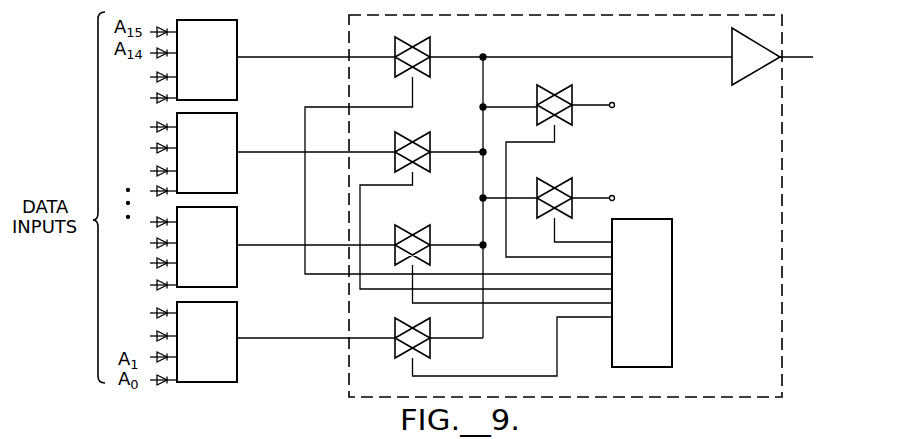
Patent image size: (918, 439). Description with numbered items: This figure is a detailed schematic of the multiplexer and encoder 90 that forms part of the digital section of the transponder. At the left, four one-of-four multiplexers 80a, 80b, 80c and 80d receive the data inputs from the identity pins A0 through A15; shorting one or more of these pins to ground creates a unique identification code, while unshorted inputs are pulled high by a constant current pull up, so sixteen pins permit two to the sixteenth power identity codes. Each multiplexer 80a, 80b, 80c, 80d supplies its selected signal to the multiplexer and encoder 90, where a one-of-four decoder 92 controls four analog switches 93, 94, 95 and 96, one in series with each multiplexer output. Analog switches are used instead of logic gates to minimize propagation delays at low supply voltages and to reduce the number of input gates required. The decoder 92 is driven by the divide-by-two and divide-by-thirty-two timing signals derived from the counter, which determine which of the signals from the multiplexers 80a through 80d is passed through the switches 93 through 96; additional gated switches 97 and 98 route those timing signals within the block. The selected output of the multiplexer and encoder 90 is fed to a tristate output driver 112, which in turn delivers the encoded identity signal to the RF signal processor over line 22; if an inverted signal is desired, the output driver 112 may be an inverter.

The multiplexer 80a is at (237, 28).
The multiplexer 80b is at (237, 121).
The multiplexer 80c is at (237, 216).
The multiplexer 80d is at (237, 314).
The analog switch 93 is at (428, 45).
The analog switch 94 is at (428, 140).
The analog switch 95 is at (428, 233).
The analog switch 96 is at (428, 326).
The transmission gate (divide by 2 output) 97 is at (568, 90).
The transmission gate (divide by 32 output) 98 is at (568, 183).
The 1 of 4 decoder 92 is at (672, 236).
The tristate output driver 112 is at (732, 37).
The line 22 is at (797, 57).
The multiplexer and encoder 90 is at (782, 352).